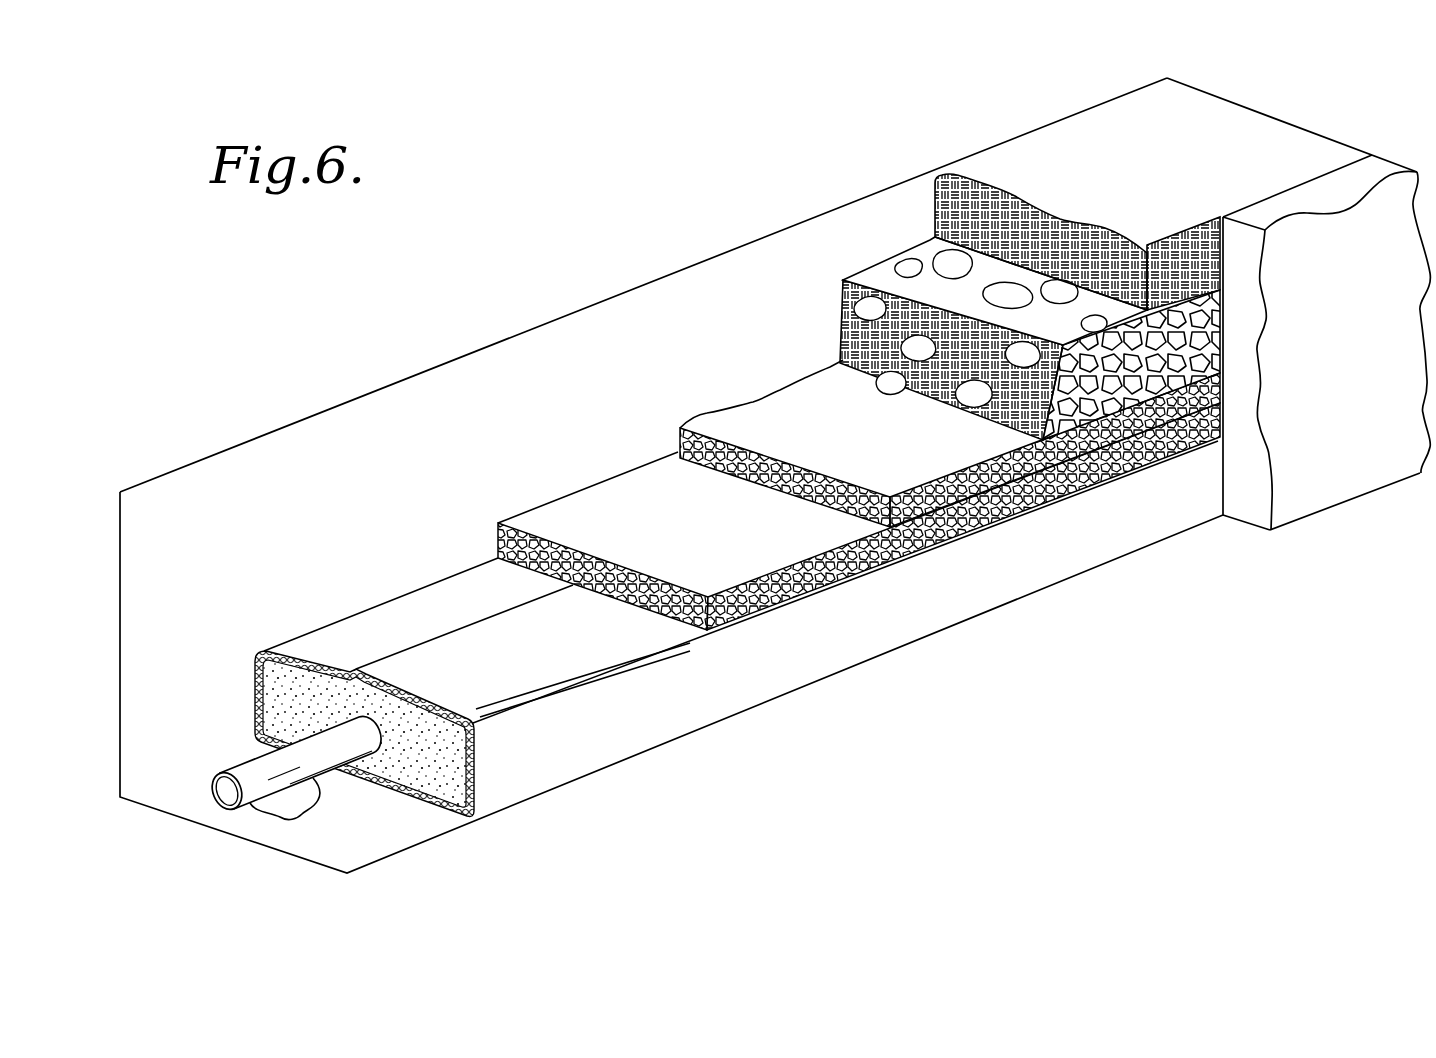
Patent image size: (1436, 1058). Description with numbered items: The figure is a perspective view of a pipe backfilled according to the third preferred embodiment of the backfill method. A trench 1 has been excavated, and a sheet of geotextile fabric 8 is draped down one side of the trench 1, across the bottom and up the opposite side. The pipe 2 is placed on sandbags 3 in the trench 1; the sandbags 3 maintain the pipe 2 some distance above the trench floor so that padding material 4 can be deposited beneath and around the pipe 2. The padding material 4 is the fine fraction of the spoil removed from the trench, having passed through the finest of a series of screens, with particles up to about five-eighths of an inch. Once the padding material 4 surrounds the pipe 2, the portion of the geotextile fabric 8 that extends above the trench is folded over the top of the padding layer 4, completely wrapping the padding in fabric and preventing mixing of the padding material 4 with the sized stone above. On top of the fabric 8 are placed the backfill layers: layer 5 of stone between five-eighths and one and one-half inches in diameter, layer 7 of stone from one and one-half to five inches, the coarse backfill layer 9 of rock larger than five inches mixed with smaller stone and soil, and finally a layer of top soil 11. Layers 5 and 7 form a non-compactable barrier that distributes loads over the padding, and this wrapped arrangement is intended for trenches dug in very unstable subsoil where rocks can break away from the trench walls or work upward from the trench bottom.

The trench 1 is at (348, 492).
The pipe 2 is at (243, 772).
The sandbags 3 is at (300, 807).
The padding material 4 is at (427, 772).
The layer of sized stone 5 is at (575, 540).
The layer of stone 7 is at (744, 437).
The geotextile fabric 8 is at (255, 680).
The coarse backfill layer 9 is at (860, 345).
The top soil 11 is at (1022, 175).